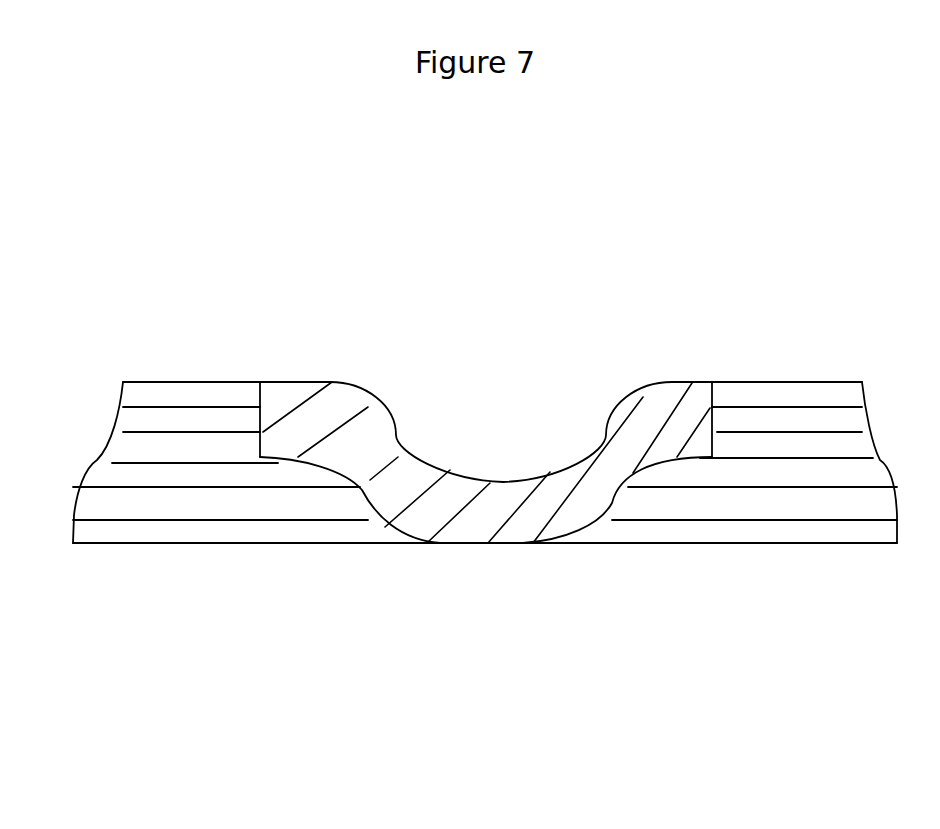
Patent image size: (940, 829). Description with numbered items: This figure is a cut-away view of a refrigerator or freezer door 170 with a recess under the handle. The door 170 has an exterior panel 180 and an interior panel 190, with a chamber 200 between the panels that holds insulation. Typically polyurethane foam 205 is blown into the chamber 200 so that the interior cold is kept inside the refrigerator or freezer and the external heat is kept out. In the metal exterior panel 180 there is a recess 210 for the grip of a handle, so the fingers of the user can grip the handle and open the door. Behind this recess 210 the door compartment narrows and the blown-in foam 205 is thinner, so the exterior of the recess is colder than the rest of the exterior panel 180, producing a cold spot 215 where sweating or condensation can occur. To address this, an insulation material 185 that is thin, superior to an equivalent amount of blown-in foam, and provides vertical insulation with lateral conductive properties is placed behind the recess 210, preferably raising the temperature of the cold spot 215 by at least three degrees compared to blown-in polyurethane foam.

The door 170 is at (673, 218).
The exterior panel 180 is at (173, 382).
The chamber 200 is at (198, 432).
The recess 210 is at (425, 462).
The cold spot 215 is at (493, 457).
The insulation material 185 is at (473, 500).
The polyurethane foam 205 is at (148, 500).
The interior panel 190 is at (298, 543).